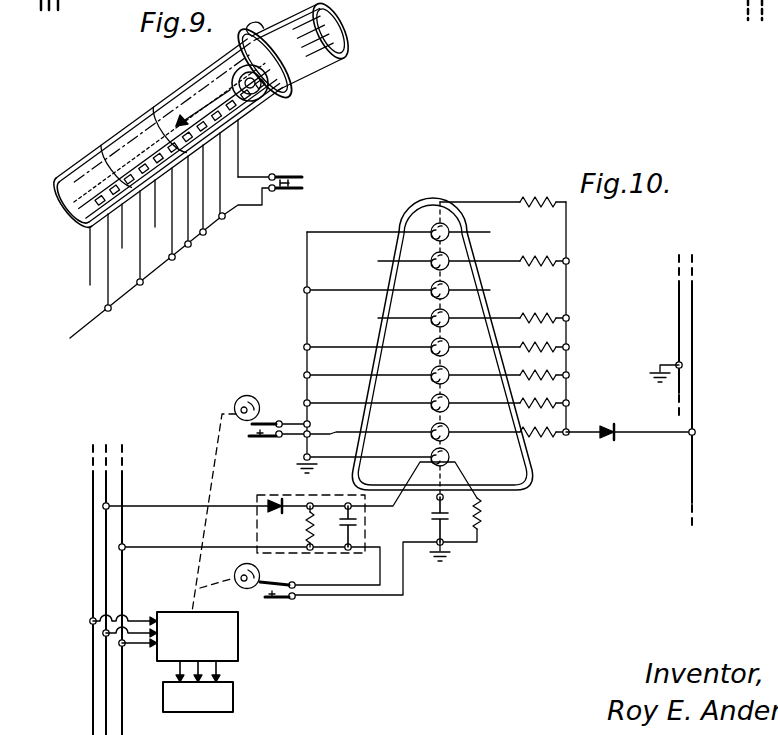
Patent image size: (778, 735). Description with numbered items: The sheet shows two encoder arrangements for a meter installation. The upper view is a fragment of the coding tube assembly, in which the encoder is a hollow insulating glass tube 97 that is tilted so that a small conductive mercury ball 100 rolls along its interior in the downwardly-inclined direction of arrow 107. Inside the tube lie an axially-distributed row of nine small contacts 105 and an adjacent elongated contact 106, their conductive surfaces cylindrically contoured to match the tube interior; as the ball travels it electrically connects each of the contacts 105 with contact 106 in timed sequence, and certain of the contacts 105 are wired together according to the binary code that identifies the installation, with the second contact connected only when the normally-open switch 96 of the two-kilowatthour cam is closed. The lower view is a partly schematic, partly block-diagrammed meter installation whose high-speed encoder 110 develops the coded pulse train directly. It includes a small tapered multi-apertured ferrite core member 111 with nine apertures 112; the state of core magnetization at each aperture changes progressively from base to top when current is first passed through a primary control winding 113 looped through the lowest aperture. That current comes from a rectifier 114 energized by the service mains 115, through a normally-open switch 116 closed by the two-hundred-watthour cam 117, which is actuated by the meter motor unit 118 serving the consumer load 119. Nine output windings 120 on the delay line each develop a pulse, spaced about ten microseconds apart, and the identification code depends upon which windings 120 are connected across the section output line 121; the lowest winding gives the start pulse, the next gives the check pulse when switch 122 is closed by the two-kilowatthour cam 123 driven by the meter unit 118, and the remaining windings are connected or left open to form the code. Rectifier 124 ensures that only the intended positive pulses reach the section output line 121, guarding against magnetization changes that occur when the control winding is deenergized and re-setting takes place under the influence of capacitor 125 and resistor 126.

In FIG. 9, the normally-open switch 96 is at (309, 179).
In FIG. 9, the hollow insulating tube 97 is at (341, 61).
In FIG. 9, the mercury ball 100 is at (274, 93).
In FIG. 9, the small contacts 105 is at (138, 127).
In FIG. 9, the elongated contact 106 is at (86, 158).
In FIG. 9, the arrow 107 is at (204, 101).
In FIG. 10, the high-speed encoder 110 is at (540, 491).
In FIG. 10, the multi-apertured ferrite core member 111 is at (514, 468).
In FIG. 10, the apertures 112 is at (430, 261).
In FIG. 10, the primary control winding 113 is at (428, 470).
In FIG. 10, the rectifier 114 is at (274, 498).
In FIG. 10, the service mains 115 is at (118, 468).
In FIG. 10, the normally-open switch 116 is at (302, 605).
In FIG. 10, the 200-watthour cam 117 is at (250, 586).
In FIG. 10, the meter motor unit 118 is at (240, 663).
In FIG. 10, the consumer load 119 is at (234, 693).
In FIG. 10, the output windings 120 is at (448, 213).
In FIG. 10, the section output line 121 is at (696, 344).
In FIG. 10, the normally-open switch 122 is at (272, 415).
In FIG. 10, the 2 kwh cam 123 is at (243, 395).
In FIG. 10, the rectifier 124 is at (616, 444).
In FIG. 10, the capacitor 125 is at (436, 519).
In FIG. 10, the resistor 126 is at (488, 528).